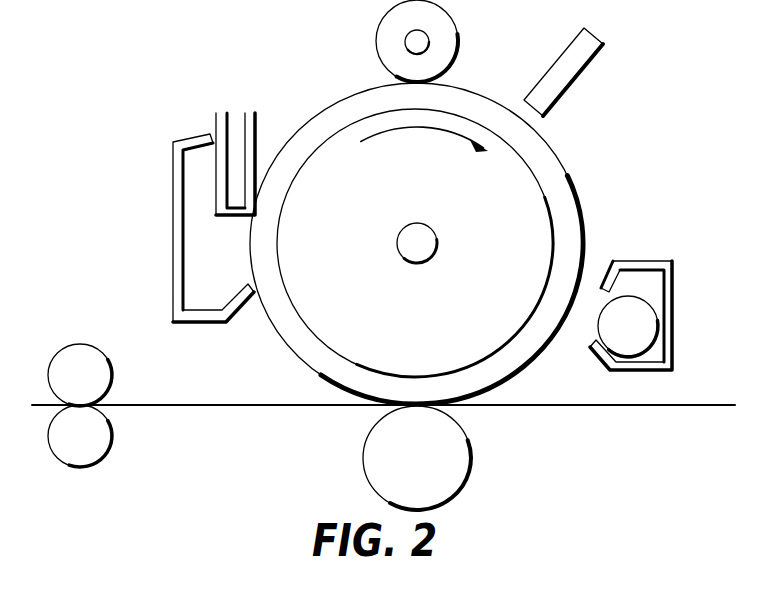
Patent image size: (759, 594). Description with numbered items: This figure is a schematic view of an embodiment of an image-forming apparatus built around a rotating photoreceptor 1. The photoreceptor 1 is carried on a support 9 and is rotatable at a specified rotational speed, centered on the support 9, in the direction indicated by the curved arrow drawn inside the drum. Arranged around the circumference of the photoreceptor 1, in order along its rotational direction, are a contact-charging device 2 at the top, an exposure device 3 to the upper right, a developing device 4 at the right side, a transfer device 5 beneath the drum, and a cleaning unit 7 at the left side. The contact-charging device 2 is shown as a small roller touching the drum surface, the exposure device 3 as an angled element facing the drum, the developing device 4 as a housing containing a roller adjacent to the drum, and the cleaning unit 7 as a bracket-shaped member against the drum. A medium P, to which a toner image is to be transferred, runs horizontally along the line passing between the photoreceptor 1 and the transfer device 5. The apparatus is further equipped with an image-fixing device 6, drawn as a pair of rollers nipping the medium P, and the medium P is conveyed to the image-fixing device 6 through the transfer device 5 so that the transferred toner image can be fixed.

The photoreceptor 1 is at (582, 210).
The contact-charging device 2 is at (459, 33).
The exposure device 3 is at (587, 72).
The developing device 4 is at (675, 305).
The transfer device 5 is at (472, 457).
The image-fixing device 6 is at (105, 453).
The cleaning unit 7 is at (188, 137).
The support 9 is at (422, 226).
The medium P is at (540, 407).